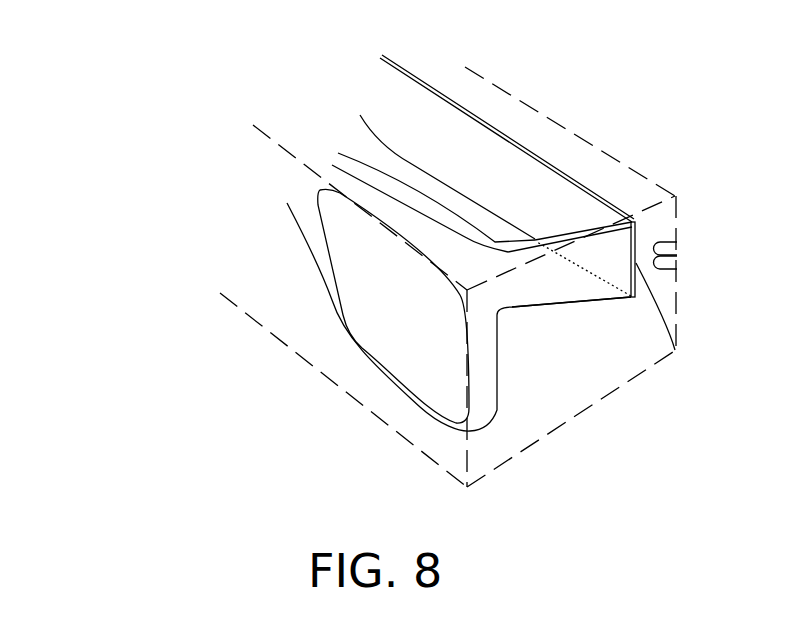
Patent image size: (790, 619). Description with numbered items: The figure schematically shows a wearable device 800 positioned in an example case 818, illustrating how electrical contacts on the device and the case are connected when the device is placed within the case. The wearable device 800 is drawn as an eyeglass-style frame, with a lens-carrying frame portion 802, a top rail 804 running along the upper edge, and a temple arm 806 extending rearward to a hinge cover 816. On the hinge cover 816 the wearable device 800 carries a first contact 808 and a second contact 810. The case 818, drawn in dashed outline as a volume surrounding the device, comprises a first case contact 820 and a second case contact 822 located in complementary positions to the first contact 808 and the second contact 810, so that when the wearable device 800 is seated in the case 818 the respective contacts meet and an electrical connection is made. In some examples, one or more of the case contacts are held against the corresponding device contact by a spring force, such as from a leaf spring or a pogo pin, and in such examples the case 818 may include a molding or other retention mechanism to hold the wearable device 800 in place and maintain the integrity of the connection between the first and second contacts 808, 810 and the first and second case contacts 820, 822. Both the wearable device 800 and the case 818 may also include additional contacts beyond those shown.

The wearable device 800 is at (137, 160).
The frame 802 is at (343, 322).
The top rail 804 is at (453, 103).
The temple arm 806 is at (633, 308).
The first contact 808 is at (638, 239).
The second contact 810 is at (675, 350).
The hinge cover 816 is at (636, 220).
The case 818 is at (343, 392).
The first case contact 820 is at (677, 247).
The second case contact 822 is at (677, 262).